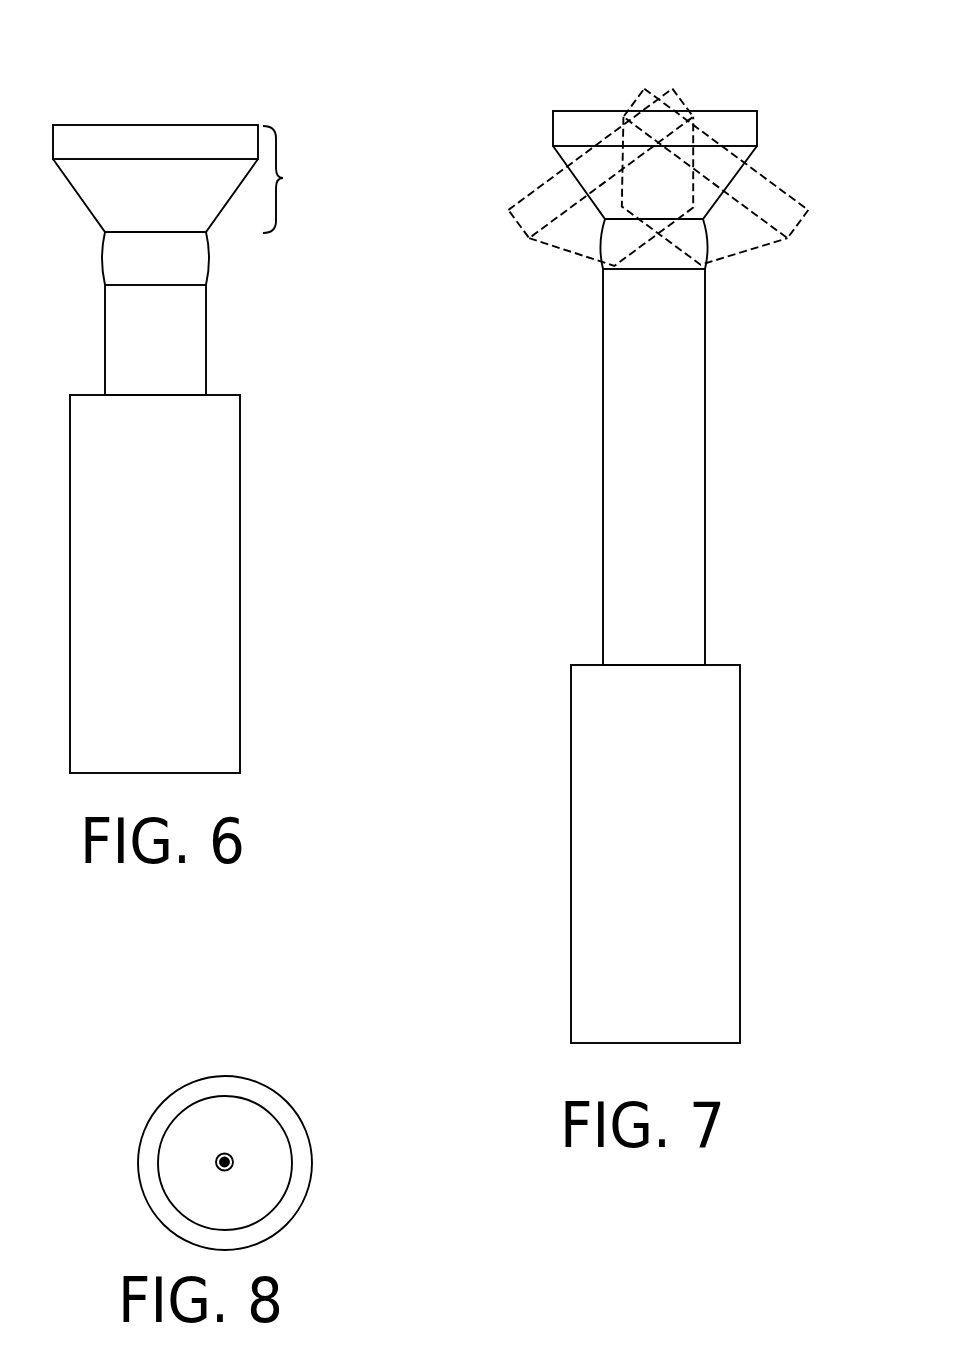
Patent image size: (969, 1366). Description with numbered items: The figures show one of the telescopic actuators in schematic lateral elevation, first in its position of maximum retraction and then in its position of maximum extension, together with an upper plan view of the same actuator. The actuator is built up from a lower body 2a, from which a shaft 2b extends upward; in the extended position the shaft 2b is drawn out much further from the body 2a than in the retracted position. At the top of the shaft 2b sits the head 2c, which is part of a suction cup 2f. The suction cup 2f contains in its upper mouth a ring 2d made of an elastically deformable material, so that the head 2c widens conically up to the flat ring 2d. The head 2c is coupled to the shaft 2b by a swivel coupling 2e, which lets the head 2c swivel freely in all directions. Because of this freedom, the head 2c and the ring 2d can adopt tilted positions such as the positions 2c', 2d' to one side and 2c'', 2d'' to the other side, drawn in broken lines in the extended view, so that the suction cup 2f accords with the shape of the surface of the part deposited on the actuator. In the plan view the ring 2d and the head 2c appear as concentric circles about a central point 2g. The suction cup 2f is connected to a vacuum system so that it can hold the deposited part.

In FIG. 6, the base body of fastening element 2a is at (180, 605).
In FIG. 7, the base body of fastening element 2a is at (680, 877).
In FIG. 6, the shaft 2b is at (180, 357).
In FIG. 7, the shaft 2b is at (678, 507).
In FIG. 6, the head 2c is at (155, 195).
In FIG. 7, the head 2c is at (642, 279).
In FIG. 8, the head 2c is at (181, 1168).
In FIG. 7, the swivelled position of head 2c' is at (595, 225).
In FIG. 7, the swivelled position of head 2c'' is at (716, 244).
In FIG. 6, the ring 2d is at (147, 96).
In FIG. 7, the ring 2d is at (589, 130).
In FIG. 8, the ring 2d is at (225, 1120).
In FIG. 7, the swivelled position of ring 2d' is at (543, 164).
In FIG. 7, the swivelled position of ring 2d'' is at (670, 120).
In FIG. 6, the swivel coupling 2e is at (180, 277).
In FIG. 6, the suction cup 2f is at (293, 179).
In FIG. 8, the central bore / center point 2g is at (220, 1157).